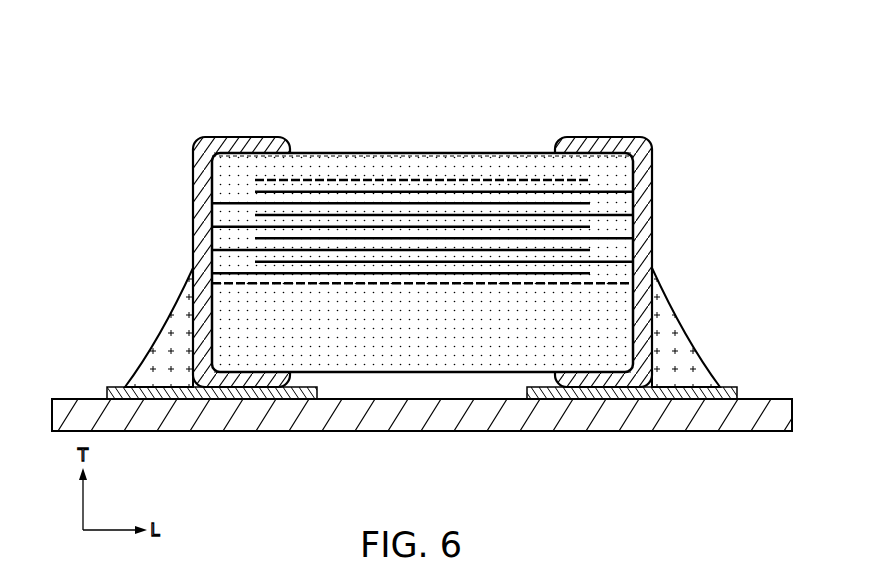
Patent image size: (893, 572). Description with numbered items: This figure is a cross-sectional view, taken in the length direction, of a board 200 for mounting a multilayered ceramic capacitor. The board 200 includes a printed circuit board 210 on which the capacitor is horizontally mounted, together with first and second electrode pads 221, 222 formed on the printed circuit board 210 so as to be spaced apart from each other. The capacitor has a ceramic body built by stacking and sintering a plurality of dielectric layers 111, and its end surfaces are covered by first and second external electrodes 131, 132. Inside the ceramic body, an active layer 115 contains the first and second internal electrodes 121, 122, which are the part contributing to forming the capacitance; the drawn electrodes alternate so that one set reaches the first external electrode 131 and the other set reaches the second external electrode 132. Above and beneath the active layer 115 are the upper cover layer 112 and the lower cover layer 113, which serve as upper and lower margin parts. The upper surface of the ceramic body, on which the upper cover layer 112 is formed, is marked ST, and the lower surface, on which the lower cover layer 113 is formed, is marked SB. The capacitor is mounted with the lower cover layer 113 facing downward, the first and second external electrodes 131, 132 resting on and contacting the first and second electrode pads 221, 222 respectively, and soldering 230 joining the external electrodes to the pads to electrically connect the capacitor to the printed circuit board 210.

The board for mounting a multilayered ceramic capacitor 200 is at (440, 33).
The dielectric layer 111 is at (558, 241).
The upper cover layer 112 is at (449, 162).
The lower cover layer 113 is at (448, 355).
The active layer 115 is at (602, 221).
The first internal electrode 121 is at (233, 226).
The second internal electrode 122 is at (267, 232).
The first external electrode 131 is at (243, 145).
The second external electrode 132 is at (604, 143).
The printed circuit board 210 is at (712, 432).
The first electrode pad 221 is at (115, 387).
The second electrode pad 222 is at (728, 387).
The soldering 230 is at (167, 360).
The upper surface of the ceramic body ST is at (382, 152).
The lower surface of the ceramic body SB is at (392, 373).